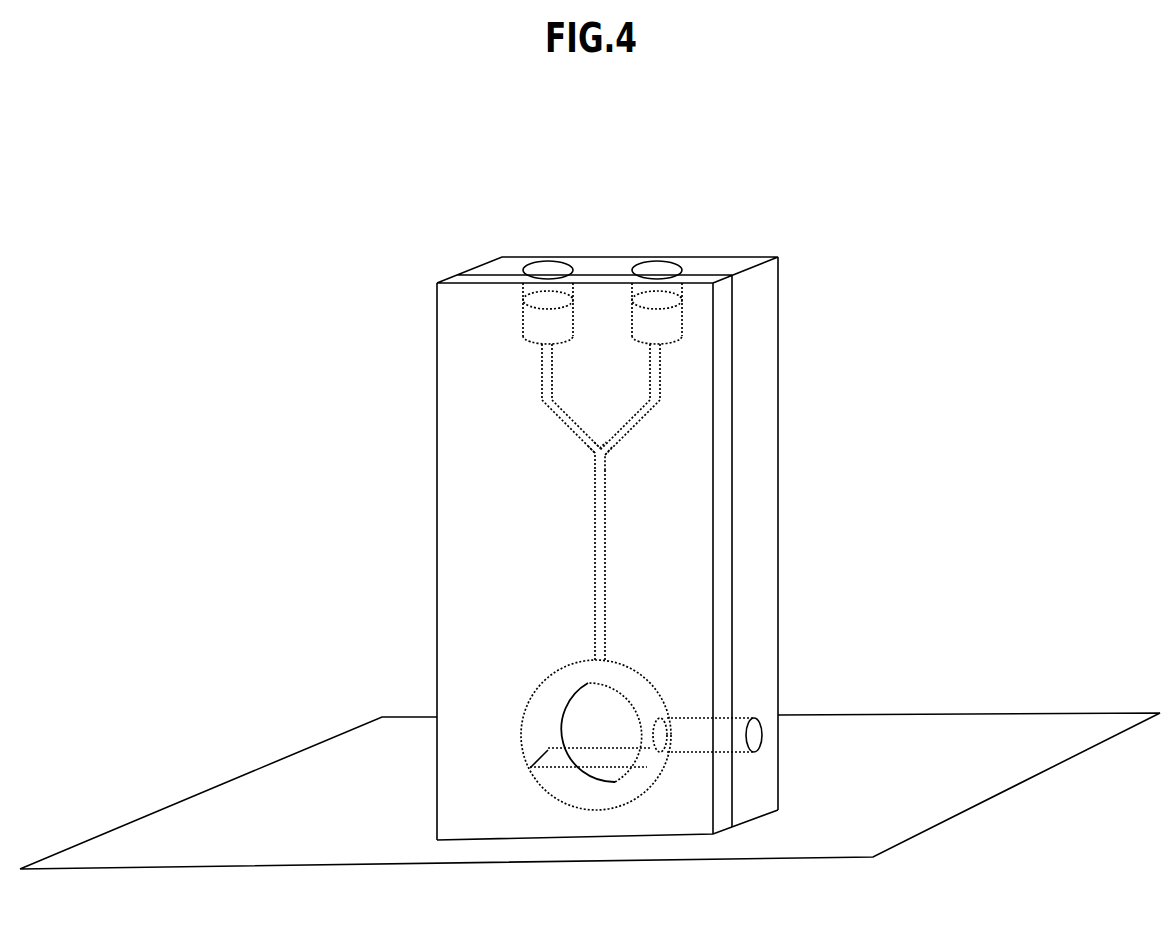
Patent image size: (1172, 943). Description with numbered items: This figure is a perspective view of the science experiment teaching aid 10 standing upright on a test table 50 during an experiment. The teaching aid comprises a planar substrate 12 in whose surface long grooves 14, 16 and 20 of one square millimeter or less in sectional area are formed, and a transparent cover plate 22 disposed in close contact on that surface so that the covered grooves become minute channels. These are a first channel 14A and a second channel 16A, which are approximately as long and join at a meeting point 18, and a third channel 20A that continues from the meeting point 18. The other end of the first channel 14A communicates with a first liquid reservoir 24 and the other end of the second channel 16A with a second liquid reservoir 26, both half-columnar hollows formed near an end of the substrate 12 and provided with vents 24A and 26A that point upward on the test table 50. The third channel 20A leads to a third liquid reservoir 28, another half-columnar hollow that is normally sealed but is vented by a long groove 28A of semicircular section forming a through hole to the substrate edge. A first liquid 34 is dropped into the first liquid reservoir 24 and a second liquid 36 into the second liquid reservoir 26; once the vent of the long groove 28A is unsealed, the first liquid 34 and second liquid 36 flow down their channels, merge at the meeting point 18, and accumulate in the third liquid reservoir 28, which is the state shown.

The science experiment teaching aid 10 is at (600, 498).
The substrate 12 is at (776, 780).
The long groove 14 is at (765, 414).
The first channel 14A is at (658, 410).
The long groove 16 is at (436, 418).
The second channel 16A is at (550, 408).
The meeting point 18 is at (600, 460).
The long groove 20 is at (437, 565).
The third channel 20A is at (600, 530).
The transparent cover plate 22 is at (437, 805).
The first liquid reservoir 24 is at (673, 320).
The vent 24A is at (656, 265).
The second liquid reservoir 26 is at (530, 323).
The vent 26A is at (546, 265).
The third liquid reservoir 28 is at (537, 712).
The long groove 28A is at (762, 740).
The first liquid 34 is at (673, 338).
The second liquid 36 is at (535, 340).
The test table 50 is at (977, 807).